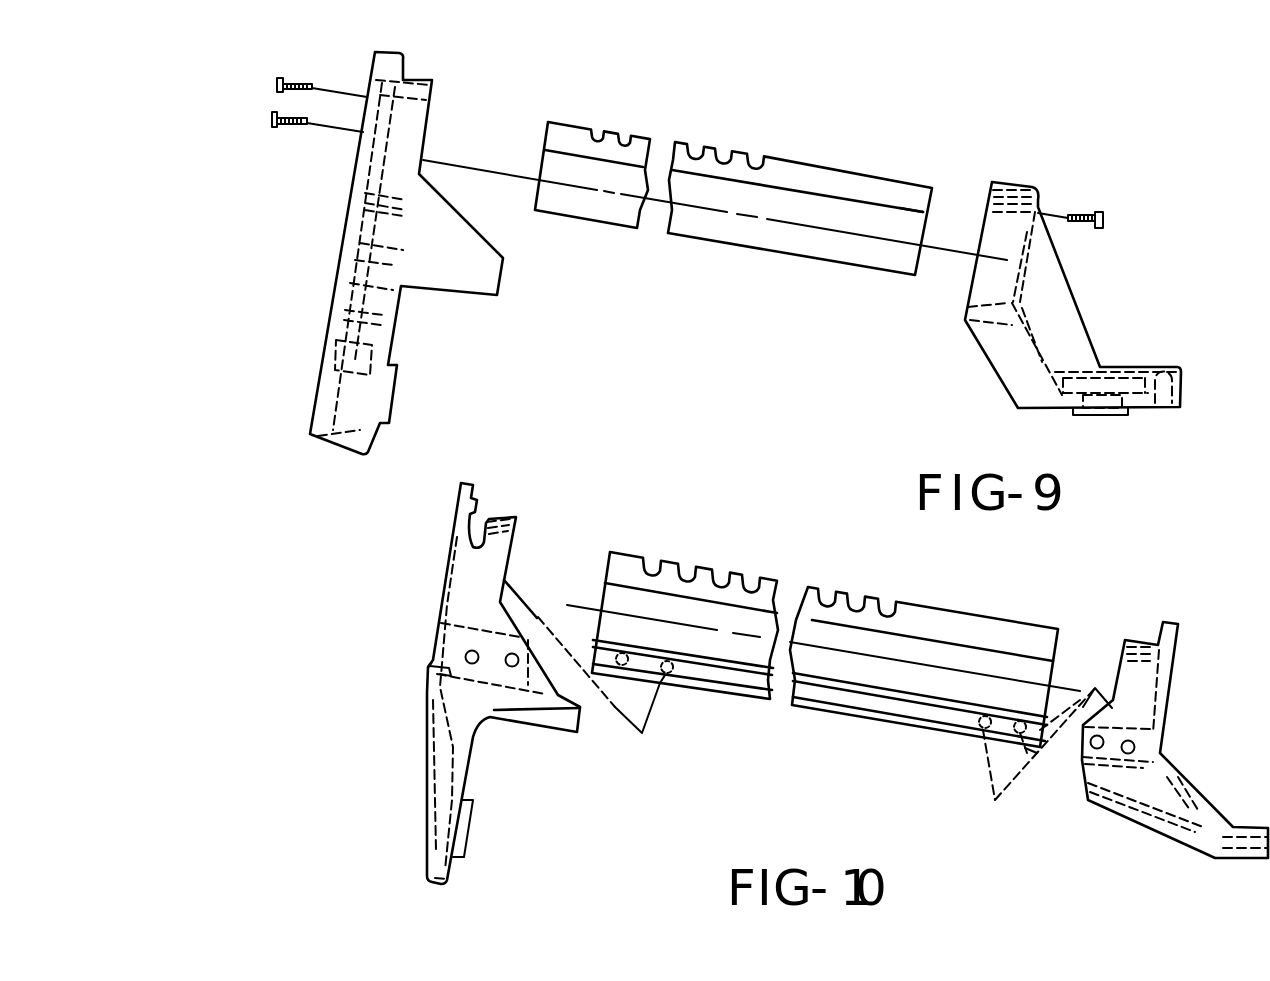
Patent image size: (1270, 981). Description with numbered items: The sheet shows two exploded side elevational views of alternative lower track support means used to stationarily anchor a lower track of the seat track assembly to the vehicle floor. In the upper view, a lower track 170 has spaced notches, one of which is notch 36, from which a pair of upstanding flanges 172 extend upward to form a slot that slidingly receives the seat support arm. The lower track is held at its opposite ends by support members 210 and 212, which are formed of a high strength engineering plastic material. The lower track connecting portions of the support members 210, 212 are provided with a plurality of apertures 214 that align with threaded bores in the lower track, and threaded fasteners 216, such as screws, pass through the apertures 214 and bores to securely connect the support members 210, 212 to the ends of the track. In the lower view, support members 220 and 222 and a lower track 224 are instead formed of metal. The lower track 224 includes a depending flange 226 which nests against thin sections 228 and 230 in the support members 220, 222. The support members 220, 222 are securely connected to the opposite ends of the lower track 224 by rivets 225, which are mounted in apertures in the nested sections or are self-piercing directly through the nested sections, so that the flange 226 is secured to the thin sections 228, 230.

In FIG. 9, the notch 36 is at (927, 207).
In FIG. 9, the lower track 170 is at (736, 234).
In FIG. 9, the upstanding flanges 172 is at (850, 134).
In FIG. 9, the support member 210 is at (417, 309).
In FIG. 9, the support member 212 is at (1147, 287).
In FIG. 9, the apertures 214 is at (363, 97).
In FIG. 9, the threaded fasteners 216 is at (284, 112).
In FIG. 10, the support member 220 is at (503, 768).
In FIG. 10, the support member 222 is at (1050, 805).
In FIG. 10, the lower track 224 is at (1000, 568).
In FIG. 10, the rivets 225 is at (508, 654).
In FIG. 10, the depending flange 226 is at (825, 693).
In FIG. 10, the thin section 228 is at (426, 664).
In FIG. 10, the thin section 230 is at (1178, 752).